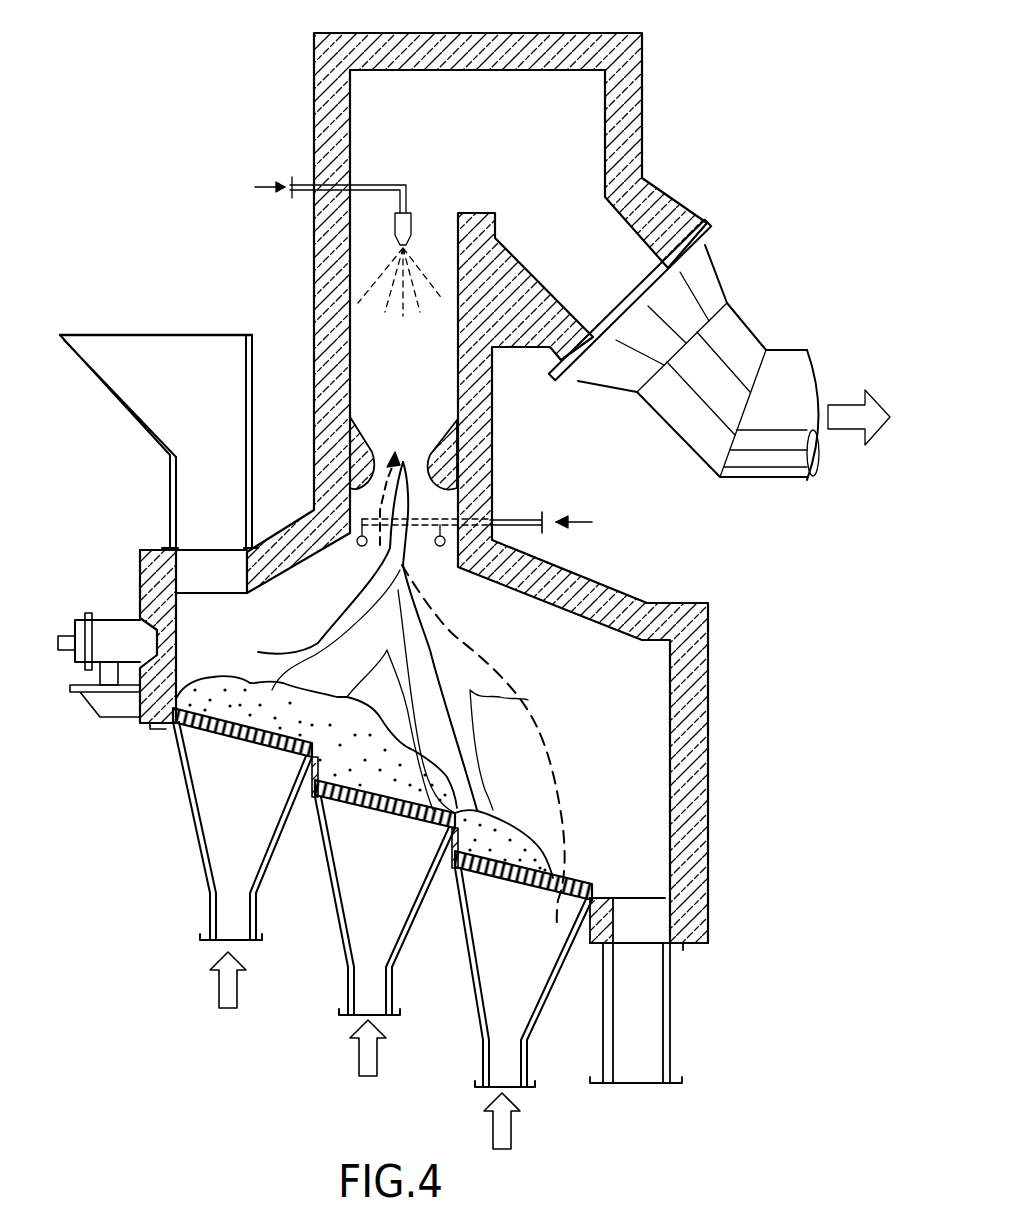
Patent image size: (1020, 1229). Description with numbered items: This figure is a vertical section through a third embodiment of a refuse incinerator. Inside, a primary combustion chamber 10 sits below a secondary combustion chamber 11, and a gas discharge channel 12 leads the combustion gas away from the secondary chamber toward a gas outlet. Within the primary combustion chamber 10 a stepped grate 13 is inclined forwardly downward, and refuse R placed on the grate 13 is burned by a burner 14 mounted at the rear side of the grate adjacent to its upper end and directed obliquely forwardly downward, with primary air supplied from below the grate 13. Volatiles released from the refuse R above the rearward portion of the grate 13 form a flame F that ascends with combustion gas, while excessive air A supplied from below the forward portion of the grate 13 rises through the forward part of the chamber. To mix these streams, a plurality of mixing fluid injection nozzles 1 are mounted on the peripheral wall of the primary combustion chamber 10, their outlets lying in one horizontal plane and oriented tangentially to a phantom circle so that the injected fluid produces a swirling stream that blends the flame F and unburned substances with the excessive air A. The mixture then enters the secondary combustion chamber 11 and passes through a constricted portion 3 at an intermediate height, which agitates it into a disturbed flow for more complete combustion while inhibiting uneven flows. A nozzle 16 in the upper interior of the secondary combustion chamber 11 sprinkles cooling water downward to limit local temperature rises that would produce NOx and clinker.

The mixing fluid injection nozzle 1 is at (358, 548).
The constricted portion 3 is at (367, 458).
The primary combustion chamber 10 is at (570, 633).
The secondary combustion chamber 11 is at (367, 317).
The gas discharge channel 12 is at (577, 133).
The stepped grate 13 is at (267, 747).
The burner 14 is at (120, 624).
The nozzle 16 is at (411, 230).
The refuse R is at (263, 697).
The flame F is at (512, 698).
The excessive air A is at (550, 743).